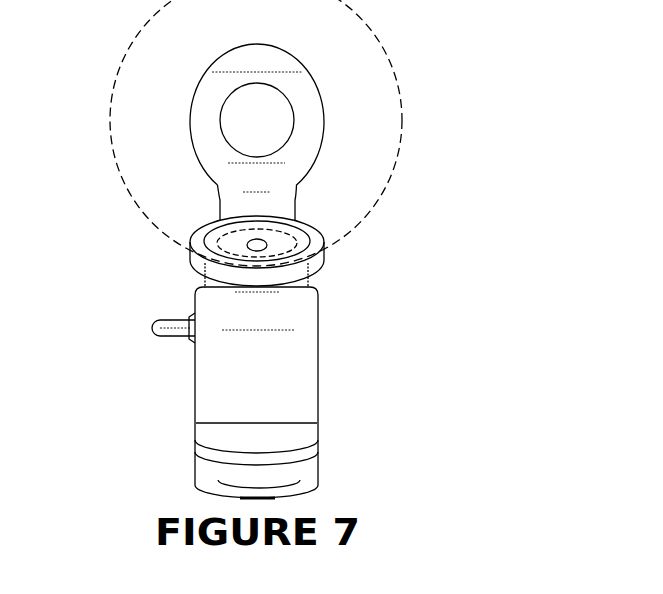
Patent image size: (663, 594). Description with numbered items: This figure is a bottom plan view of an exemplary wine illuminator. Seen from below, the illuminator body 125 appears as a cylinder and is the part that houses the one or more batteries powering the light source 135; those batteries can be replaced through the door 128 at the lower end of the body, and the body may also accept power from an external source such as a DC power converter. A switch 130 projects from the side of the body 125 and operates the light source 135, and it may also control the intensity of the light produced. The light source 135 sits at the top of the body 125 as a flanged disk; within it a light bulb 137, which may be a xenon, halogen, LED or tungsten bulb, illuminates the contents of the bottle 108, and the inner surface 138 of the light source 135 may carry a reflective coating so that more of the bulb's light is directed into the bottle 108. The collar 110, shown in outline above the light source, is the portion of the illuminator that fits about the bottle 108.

The bottle 108 is at (386, 94).
The collar 110 is at (194, 96).
The illuminator body 125 is at (194, 406).
The door 128 is at (321, 467).
The switch 130 is at (161, 339).
The light source 135 is at (322, 260).
The light bulb 137 is at (241, 243).
The inner surface 138 is at (233, 257).